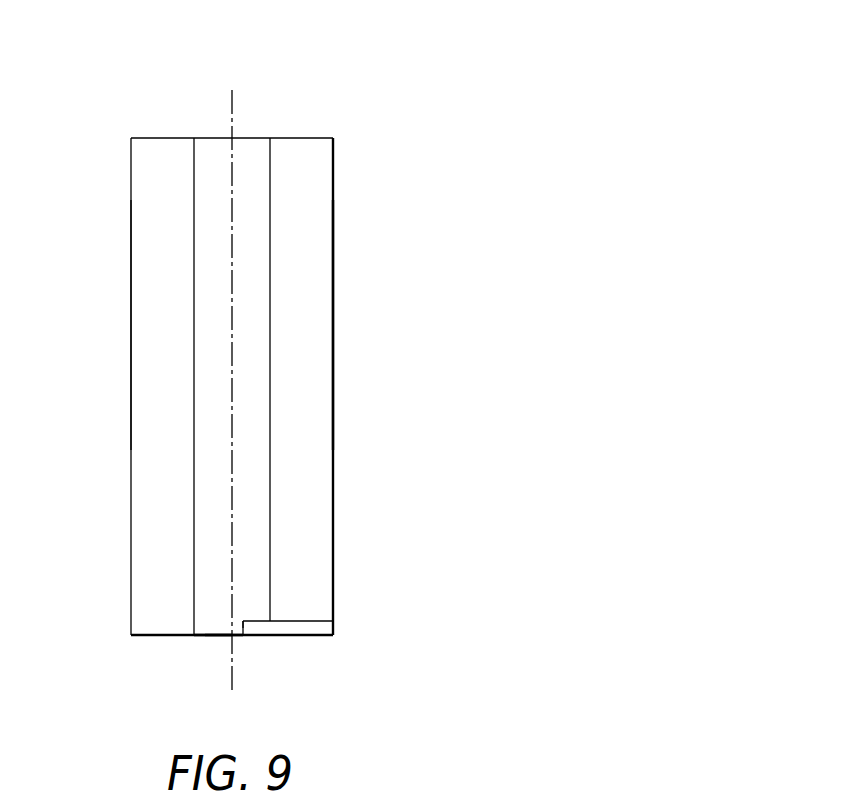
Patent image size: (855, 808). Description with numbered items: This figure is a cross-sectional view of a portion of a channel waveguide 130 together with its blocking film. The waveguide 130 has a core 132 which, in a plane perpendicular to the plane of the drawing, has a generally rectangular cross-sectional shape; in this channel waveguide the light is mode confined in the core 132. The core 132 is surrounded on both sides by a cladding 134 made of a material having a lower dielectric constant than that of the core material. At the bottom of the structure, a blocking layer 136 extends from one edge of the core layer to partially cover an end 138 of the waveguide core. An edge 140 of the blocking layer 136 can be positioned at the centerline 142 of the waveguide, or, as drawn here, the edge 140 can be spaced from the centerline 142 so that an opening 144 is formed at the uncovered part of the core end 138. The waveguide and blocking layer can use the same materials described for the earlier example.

The waveguide 130 is at (323, 334).
The core 132 is at (255, 260).
The cladding 134 is at (153, 330).
The blocking layer 136 is at (310, 628).
The end 138 is at (203, 637).
The edge 140 is at (236, 624).
The centerline 142 is at (230, 103).
The opening 144 is at (218, 638).